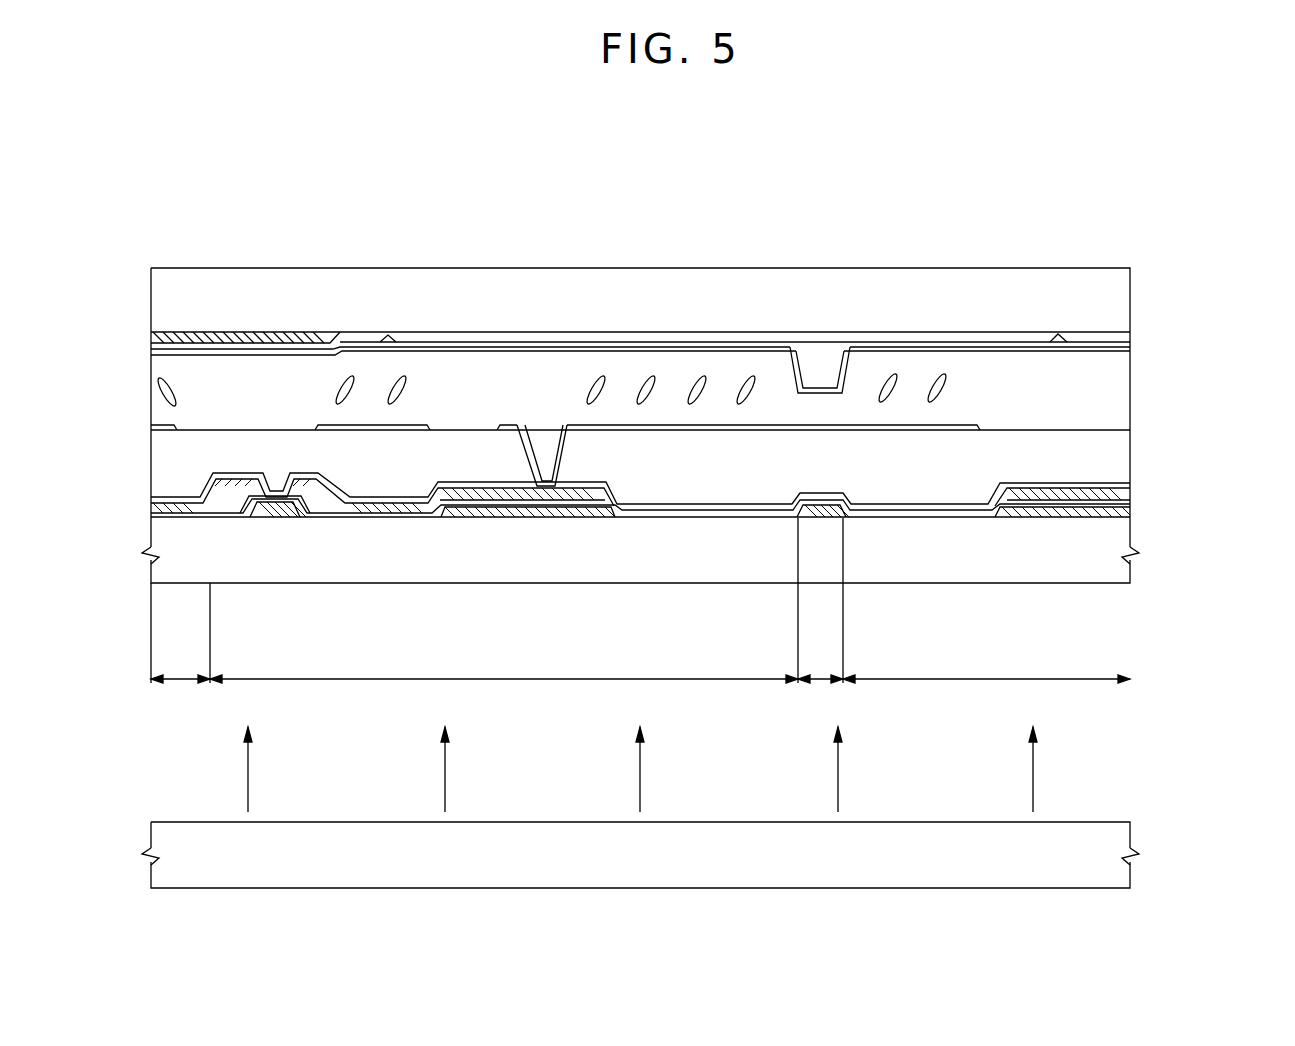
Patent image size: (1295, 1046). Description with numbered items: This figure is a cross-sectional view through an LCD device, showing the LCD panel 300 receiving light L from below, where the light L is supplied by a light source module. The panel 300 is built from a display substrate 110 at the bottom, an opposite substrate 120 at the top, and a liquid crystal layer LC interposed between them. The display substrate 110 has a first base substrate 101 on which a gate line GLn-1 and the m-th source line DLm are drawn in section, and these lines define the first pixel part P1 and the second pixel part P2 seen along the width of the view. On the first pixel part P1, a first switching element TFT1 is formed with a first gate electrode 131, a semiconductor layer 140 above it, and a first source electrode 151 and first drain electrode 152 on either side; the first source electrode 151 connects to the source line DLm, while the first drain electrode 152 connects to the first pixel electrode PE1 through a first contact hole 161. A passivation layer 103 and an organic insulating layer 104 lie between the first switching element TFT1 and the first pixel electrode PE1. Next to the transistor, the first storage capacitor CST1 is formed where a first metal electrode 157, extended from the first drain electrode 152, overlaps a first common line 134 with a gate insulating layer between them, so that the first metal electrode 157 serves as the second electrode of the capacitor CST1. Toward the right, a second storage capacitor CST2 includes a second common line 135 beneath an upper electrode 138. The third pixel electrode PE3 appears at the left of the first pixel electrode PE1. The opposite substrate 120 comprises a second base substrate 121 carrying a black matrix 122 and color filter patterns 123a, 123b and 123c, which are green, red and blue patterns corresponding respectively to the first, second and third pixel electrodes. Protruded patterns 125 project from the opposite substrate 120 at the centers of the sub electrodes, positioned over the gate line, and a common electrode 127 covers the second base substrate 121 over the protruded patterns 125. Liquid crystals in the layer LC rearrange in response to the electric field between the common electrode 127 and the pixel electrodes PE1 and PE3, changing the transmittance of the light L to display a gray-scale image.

The opposite substrate 120 is at (134, 268).
The second base substrate 121 is at (1117, 298).
The black matrix 122 is at (228, 334).
The green color filter pattern 123a is at (731, 334).
The red color filter pattern 123b is at (1078, 334).
The blue color filter pattern 123c is at (362, 334).
The protruded pattern 125 is at (818, 372).
The common electrode 127 is at (1117, 347).
The liquid crystal layer LC is at (134, 357).
The organic insulating layer 104 is at (1117, 447).
The first pixel electrode PE1 is at (702, 430).
The third pixel electrode PE3 is at (381, 430).
The first contact hole 161 is at (538, 431).
The display substrate 110 is at (134, 437).
The first base substrate 101 is at (1117, 571).
The passivation layer 103 is at (880, 510).
The first gate electrode 131 is at (280, 518).
The semiconductor layer 140 is at (318, 518).
The first source electrode 151 is at (243, 518).
The first drain electrode 152 is at (382, 518).
The first switching element TFT1 is at (405, 622).
The first common line 134 is at (497, 518).
The first metal electrode 157 is at (555, 501).
The first storage capacitor CST1 is at (585, 622).
The gate line GLn-1 is at (828, 612).
The second common line 135 is at (1117, 512).
The storage electrode 138 is at (1117, 491).
The second storage capacitor CST2 is at (1198, 478).
The m-th source line DLm is at (184, 707).
The first pixel part P1 is at (493, 707).
The second pixel part P2 is at (985, 707).
The light L is at (640, 777).
The LCD panel 300 is at (1117, 835).